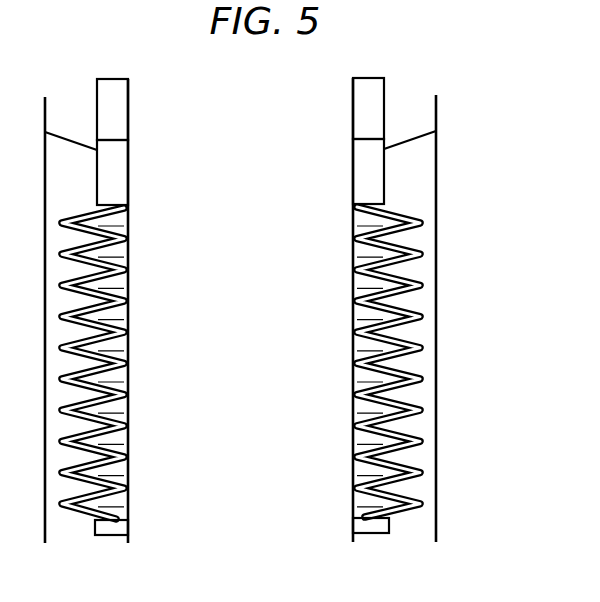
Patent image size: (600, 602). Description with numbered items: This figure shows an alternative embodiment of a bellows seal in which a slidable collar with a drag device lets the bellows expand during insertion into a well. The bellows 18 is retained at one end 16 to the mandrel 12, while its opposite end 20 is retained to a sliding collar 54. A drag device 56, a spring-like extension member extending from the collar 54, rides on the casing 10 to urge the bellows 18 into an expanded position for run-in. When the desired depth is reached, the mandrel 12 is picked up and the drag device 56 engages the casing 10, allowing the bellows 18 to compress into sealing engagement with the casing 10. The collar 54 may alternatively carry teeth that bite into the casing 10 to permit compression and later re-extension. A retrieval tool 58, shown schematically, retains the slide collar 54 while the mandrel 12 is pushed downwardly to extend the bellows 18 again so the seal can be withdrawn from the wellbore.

The casing 10 is at (438, 295).
The mandrel 12 is at (352, 445).
The end 16 is at (129, 505).
The bellows 18 is at (421, 378).
The opposite end 20 is at (127, 217).
The sliding collar 54 is at (112, 188).
The drag device 56 is at (413, 144).
The retrieval tool 58 is at (113, 112).